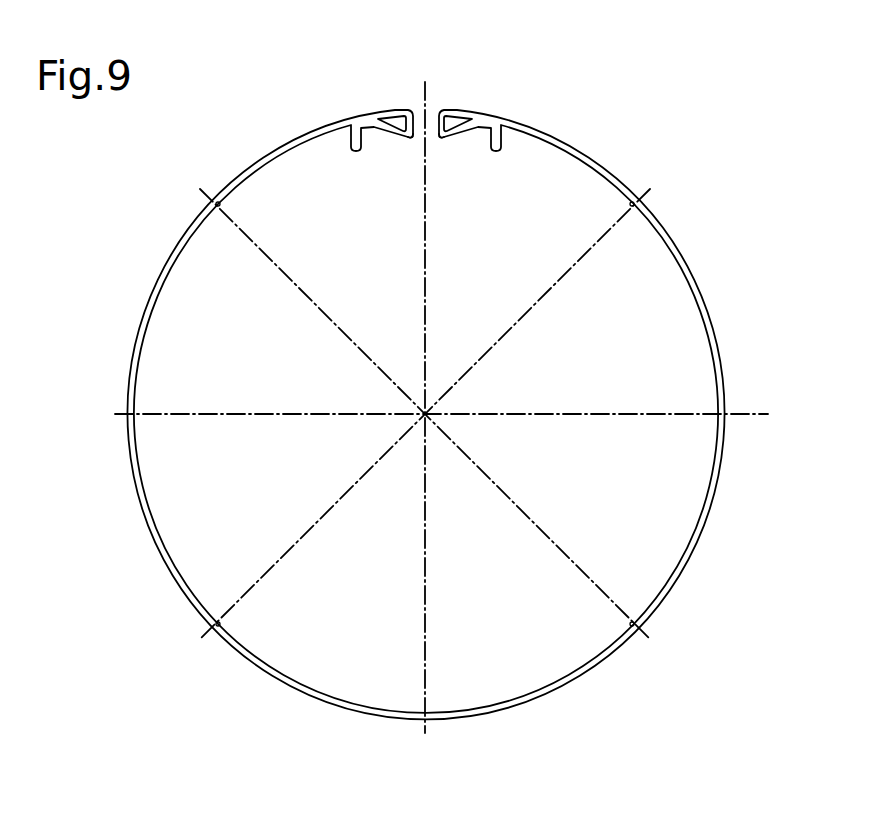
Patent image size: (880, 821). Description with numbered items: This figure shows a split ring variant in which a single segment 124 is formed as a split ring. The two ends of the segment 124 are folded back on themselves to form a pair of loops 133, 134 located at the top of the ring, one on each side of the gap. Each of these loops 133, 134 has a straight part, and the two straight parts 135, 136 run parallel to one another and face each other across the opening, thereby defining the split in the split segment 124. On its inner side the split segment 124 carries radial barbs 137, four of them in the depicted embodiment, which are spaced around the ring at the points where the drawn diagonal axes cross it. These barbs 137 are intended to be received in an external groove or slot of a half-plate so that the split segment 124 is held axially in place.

The segment 124 is at (705, 182).
The loop 133 is at (468, 107).
The loop 134 is at (388, 108).
The parallel straight part 135 is at (437, 141).
The parallel straight part 136 is at (414, 141).
The radial barb 137 is at (216, 208).